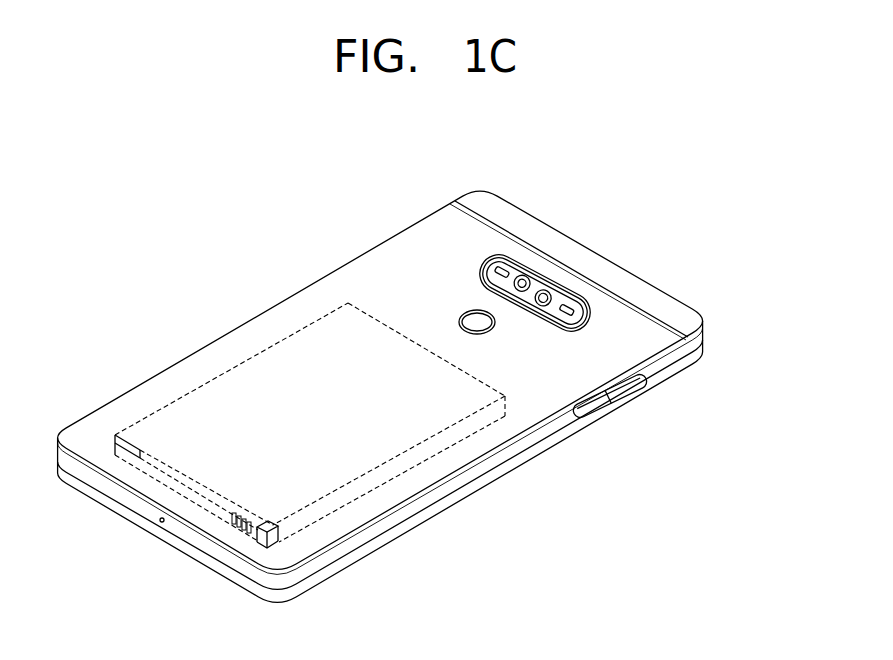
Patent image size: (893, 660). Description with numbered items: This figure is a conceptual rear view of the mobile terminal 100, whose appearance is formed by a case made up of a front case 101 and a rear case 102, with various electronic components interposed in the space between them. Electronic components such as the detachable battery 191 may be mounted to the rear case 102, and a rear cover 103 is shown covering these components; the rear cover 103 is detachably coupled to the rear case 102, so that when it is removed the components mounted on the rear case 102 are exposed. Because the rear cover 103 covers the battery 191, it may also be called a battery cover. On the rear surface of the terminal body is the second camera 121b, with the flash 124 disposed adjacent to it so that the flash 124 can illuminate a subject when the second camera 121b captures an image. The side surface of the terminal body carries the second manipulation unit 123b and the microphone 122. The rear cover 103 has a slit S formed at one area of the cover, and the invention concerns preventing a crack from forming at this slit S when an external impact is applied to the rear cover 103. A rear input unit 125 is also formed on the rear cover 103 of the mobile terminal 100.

The mobile terminal 100 is at (240, 297).
The front case 101 is at (705, 355).
The rear case 102 is at (705, 340).
The rear cover 103 is at (704, 318).
The second camera 121b is at (524, 280).
The microphone 122 is at (160, 522).
The second manipulation unit 123b is at (596, 404).
The flash 124 is at (583, 293).
The rear input unit 125 is at (462, 313).
The slit S is at (573, 280).
The battery 191 is at (228, 378).